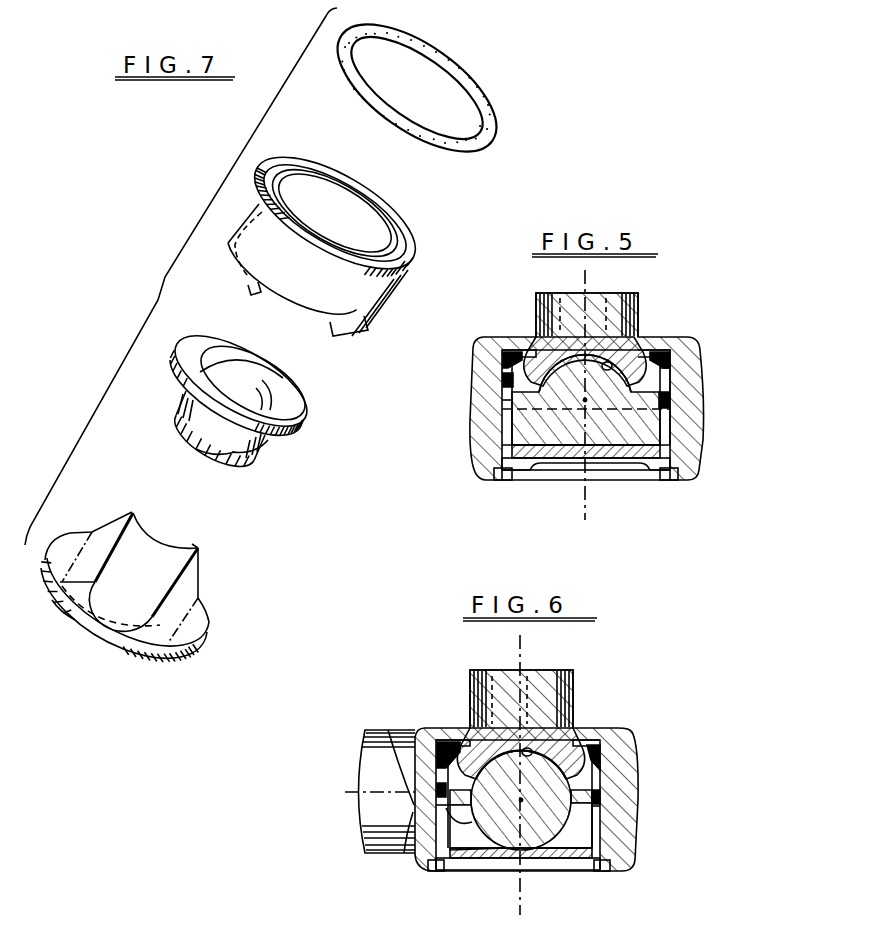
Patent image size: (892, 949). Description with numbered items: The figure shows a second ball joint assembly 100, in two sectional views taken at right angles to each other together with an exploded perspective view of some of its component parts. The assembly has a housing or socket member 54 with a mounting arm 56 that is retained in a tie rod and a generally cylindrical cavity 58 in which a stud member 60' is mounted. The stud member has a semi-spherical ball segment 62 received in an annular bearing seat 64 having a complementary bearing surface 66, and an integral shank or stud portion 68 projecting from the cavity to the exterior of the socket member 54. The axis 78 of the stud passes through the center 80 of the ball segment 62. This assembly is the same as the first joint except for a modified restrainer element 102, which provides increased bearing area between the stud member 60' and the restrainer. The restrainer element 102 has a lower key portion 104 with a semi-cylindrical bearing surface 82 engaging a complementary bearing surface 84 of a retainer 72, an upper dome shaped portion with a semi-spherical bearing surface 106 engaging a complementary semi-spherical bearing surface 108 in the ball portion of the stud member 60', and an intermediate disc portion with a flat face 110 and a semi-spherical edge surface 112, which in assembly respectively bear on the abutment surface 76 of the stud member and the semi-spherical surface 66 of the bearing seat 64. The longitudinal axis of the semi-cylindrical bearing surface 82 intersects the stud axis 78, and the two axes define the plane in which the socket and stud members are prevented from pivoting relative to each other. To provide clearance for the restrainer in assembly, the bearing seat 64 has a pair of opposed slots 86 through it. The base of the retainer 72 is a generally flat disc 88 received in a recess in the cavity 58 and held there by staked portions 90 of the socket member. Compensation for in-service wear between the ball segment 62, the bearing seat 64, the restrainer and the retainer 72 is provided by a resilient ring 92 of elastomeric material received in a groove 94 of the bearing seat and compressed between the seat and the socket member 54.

In FIG. 5, the housing or socket member 54 is at (472, 468).
In FIG. 6, the housing or socket member 54 is at (638, 860).
In FIG. 6, the mounting arm 56 is at (380, 741).
In FIG. 6, the cylindrical cavity 58 is at (597, 828).
In FIG. 5, the stud member 60' is at (626, 392).
In FIG. 6, the stud member 60' is at (534, 773).
In FIG. 5, the semi-spherical ball segment 62 is at (670, 372).
In FIG. 6, the semi-spherical ball segment 62 is at (590, 757).
In FIG. 7, the annular bearing seat 64 is at (316, 225).
In FIG. 5, the annular bearing seat 64 is at (495, 367).
In FIG. 6, the annular bearing seat 64 is at (606, 786).
In FIG. 7, the bearing surface 66 is at (375, 232).
In FIG. 6, the bearing surface 66 is at (400, 843).
In FIG. 5, the shank or stud portion 68 is at (553, 309).
In FIG. 6, the shank or stud portion 68 is at (548, 683).
In FIG. 7, the retainer 72 is at (162, 600).
In FIG. 5, the retainer 72 is at (572, 462).
In FIG. 6, the retainer 72 is at (545, 860).
In FIG. 5, the abutment surface 76 is at (667, 404).
In FIG. 6, the abutment surface 76 is at (597, 802).
In FIG. 5, the axis 78 is at (585, 287).
In FIG. 6, the axis 78 is at (519, 652).
In FIG. 5, the center 80 is at (584, 402).
In FIG. 6, the center 80 is at (524, 799).
In FIG. 7, the semi-cylindrical bearing surface 82 is at (237, 469).
In FIG. 6, the semi-cylindrical bearing surface 82 is at (457, 817).
In FIG. 7, the complementary bearing surface 84 is at (178, 556).
In FIG. 5, the complementary bearing surface 84 is at (620, 438).
In FIG. 6, the complementary bearing surface 84 is at (510, 835).
In FIG. 7, the slots 86 is at (257, 292).
In FIG. 7, the flat disc 88 is at (106, 640).
In FIG. 5, the flat disc 88 is at (518, 483).
In FIG. 6, the flat disc 88 is at (587, 862).
In FIG. 5, the staked portions 90 is at (503, 481).
In FIG. 6, the staked portions 90 is at (600, 870).
In FIG. 7, the resilient ring 92 is at (376, 98).
In FIG. 5, the resilient ring 92 is at (500, 352).
In FIG. 6, the resilient ring 92 is at (440, 745).
In FIG. 7, the groove 94 is at (268, 173).
In FIG. 5, the second joint assembly 100 is at (591, 411).
In FIG. 6, the second joint assembly 100 is at (496, 788).
In FIG. 7, the restrainer element 102 is at (270, 420).
In FIG. 5, the restrainer element 102 is at (638, 442).
In FIG. 7, the lower key portion 104 is at (208, 459).
In FIG. 5, the lower key portion 104 is at (655, 426).
In FIG. 7, the semi-spherical bearing surface 106 is at (258, 372).
In FIG. 5, the semi-spherical bearing surface 106 is at (640, 357).
In FIG. 6, the semi-spherical bearing surface 106 is at (572, 770).
In FIG. 5, the semi-spherical bearing surface 108 is at (637, 341).
In FIG. 6, the semi-spherical bearing surface 108 is at (540, 752).
In FIG. 7, the flat face 110 is at (268, 416).
In FIG. 5, the flat face 110 is at (510, 383).
In FIG. 6, the flat face 110 is at (437, 773).
In FIG. 7, the semi-spherical edge surface 112 is at (279, 440).
In FIG. 5, the semi-spherical edge surface 112 is at (503, 408).
In FIG. 6, the semi-spherical edge surface 112 is at (440, 800).